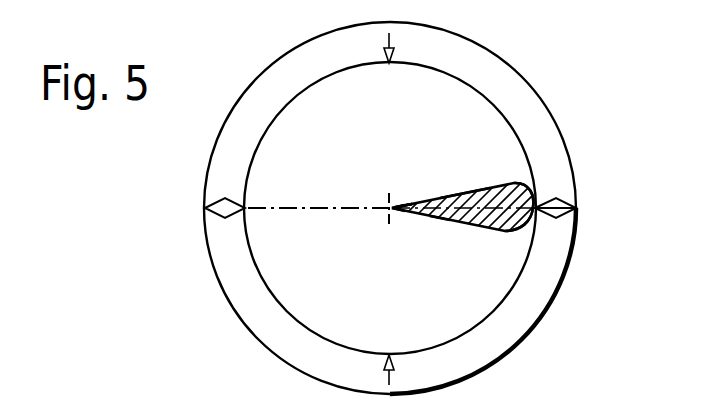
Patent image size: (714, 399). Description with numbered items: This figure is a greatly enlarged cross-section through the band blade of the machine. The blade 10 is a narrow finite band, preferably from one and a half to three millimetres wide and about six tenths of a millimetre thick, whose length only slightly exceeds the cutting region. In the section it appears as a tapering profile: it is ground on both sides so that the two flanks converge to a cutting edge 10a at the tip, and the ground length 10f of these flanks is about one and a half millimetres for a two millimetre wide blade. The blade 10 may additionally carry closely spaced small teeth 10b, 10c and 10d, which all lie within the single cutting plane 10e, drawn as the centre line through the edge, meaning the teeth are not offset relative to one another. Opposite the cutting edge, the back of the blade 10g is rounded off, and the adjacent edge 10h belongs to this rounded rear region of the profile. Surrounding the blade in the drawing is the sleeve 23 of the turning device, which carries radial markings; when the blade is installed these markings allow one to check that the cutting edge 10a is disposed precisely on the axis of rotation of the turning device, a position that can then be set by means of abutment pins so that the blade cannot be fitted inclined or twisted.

The sleeve 23 is at (500, 73).
The blade 10 is at (486, 216).
The cutting edge 10a is at (385, 215).
The small tooth 10b is at (405, 205).
The small tooth 10c is at (405, 205).
The small tooth 10d is at (406, 205).
The cutting plane 10e is at (296, 207).
The ground length 10f is at (465, 187).
The back of the blade 10g is at (530, 234).
The blade upper end edge 10h is at (516, 184).